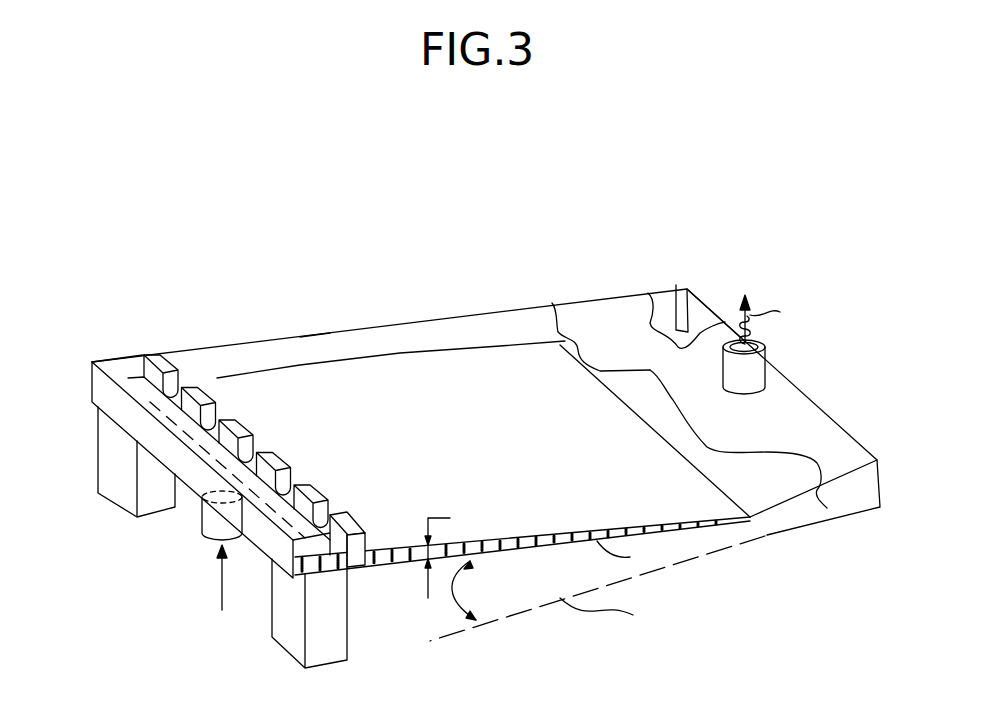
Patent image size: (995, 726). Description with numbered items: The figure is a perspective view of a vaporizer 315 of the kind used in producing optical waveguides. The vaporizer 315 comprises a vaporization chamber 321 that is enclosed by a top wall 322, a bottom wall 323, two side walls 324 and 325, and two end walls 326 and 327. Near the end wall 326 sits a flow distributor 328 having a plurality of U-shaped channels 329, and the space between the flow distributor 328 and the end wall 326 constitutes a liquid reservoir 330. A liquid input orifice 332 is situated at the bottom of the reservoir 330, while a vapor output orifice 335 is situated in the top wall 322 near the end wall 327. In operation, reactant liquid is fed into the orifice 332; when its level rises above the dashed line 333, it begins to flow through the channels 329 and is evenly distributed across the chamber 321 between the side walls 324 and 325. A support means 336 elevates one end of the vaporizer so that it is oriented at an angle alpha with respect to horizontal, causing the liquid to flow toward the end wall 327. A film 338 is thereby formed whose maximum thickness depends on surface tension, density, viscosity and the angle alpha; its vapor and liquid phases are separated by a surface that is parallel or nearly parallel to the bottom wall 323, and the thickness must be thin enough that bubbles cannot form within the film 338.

The vaporizer 315 is at (311, 229).
The vaporization chamber 321 is at (305, 326).
The top wall 322 is at (817, 423).
The bottom wall 323 is at (676, 285).
The side wall 324 is at (520, 328).
The side wall 325 is at (848, 497).
The end wall 326 is at (103, 390).
The end wall 327 is at (692, 292).
The flow distributor 328 is at (278, 468).
The U-shaped channels 329 is at (218, 413).
The liquid reservoir 330 is at (136, 349).
The liquid input orifice 332 is at (220, 540).
The dashed line 333 is at (128, 378).
The vapor output orifice 335 is at (768, 368).
The support means 336 is at (122, 511).
The film 338 is at (380, 373).